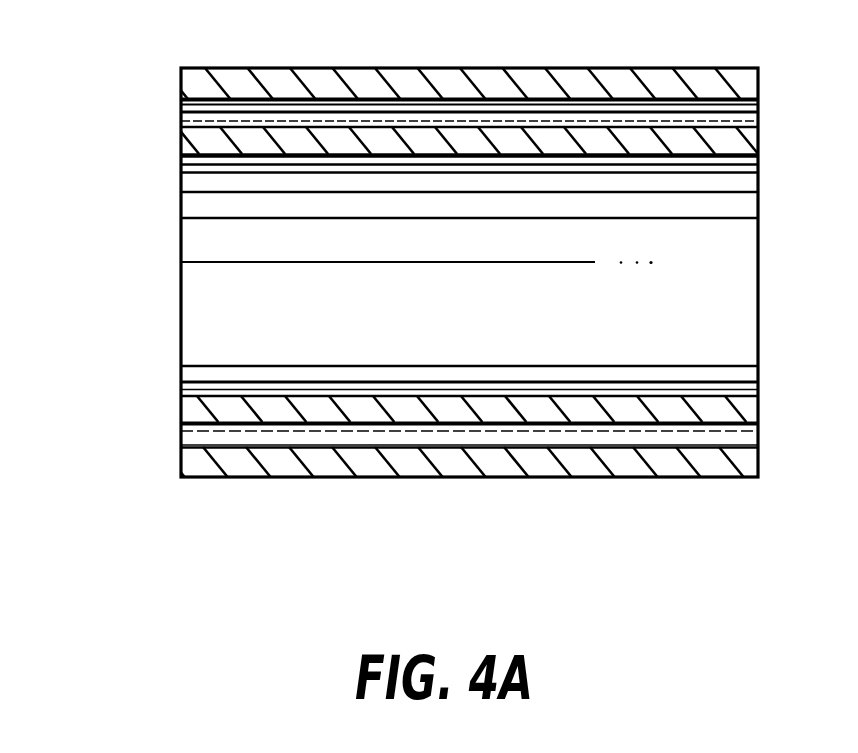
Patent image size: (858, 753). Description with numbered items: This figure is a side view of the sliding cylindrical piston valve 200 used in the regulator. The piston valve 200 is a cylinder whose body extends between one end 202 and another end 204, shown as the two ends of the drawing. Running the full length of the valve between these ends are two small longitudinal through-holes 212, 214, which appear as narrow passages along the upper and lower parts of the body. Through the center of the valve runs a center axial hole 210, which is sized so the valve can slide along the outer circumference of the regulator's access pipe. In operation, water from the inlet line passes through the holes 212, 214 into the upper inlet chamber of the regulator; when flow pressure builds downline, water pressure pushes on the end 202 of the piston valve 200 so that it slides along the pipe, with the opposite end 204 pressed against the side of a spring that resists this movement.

The sliding cylindrical piston valve 200 is at (221, 540).
The end 202 is at (178, 89).
The end 204 is at (762, 458).
The center axial hole 210 is at (195, 326).
The longitudinal through-hole 212 is at (742, 115).
The longitudinal through-hole 214 is at (738, 433).